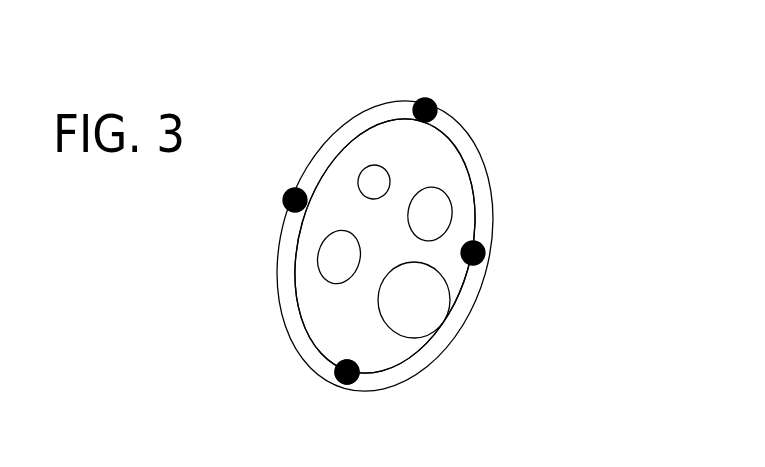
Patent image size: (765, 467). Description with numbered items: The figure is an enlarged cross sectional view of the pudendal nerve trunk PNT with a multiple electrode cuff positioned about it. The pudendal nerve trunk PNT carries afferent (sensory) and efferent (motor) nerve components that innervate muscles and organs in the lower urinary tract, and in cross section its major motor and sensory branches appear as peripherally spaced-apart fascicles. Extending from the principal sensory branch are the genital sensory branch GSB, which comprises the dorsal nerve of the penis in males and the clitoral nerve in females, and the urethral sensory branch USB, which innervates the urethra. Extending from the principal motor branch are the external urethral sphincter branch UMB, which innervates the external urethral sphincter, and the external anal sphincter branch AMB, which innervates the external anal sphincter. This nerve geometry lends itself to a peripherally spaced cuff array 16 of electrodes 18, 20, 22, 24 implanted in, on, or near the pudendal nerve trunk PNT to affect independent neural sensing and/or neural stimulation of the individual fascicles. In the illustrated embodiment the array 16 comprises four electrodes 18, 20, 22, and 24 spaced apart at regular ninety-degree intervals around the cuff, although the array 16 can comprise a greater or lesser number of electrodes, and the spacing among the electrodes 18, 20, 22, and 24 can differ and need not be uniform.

The cuff array 16 is at (381, 242).
The electrode 18 is at (472, 79).
The electrode 20 is at (500, 466).
The electrode 22 is at (352, 383).
The electrode 24 is at (555, 245).
The pudendal nerve trunk PNT is at (430, 245).
The genital sensory branch GSB is at (286, 184).
The urethral sensory branch USB is at (514, 202).
The external anal sphincter branch AMB is at (269, 256).
The external urethral sphincter branch UMB is at (506, 300).